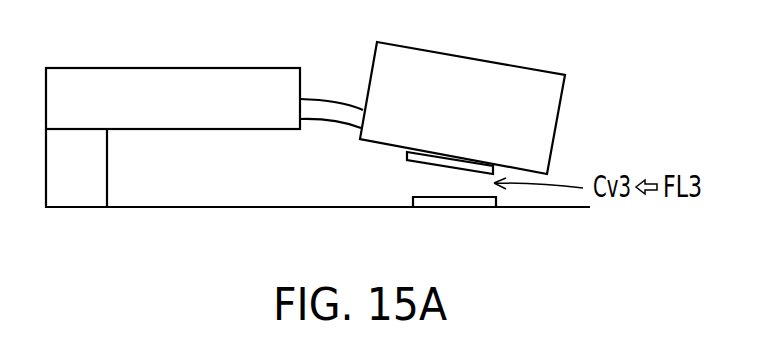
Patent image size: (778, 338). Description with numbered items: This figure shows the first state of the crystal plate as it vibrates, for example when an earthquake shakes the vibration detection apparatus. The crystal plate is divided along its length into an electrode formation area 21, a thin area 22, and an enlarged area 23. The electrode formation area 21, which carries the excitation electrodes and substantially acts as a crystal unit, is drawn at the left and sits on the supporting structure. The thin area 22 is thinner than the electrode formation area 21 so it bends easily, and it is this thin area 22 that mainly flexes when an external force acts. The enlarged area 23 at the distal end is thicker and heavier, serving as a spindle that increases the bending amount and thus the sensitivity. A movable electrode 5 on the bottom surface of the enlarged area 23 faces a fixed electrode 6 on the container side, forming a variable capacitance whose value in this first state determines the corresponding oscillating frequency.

The electrode formation area 21 is at (197, 68).
The thin area 22 is at (332, 99).
The enlarged area 23 is at (470, 58).
The movable electrode 5 is at (405, 153).
The fixed electrode 6 is at (497, 199).